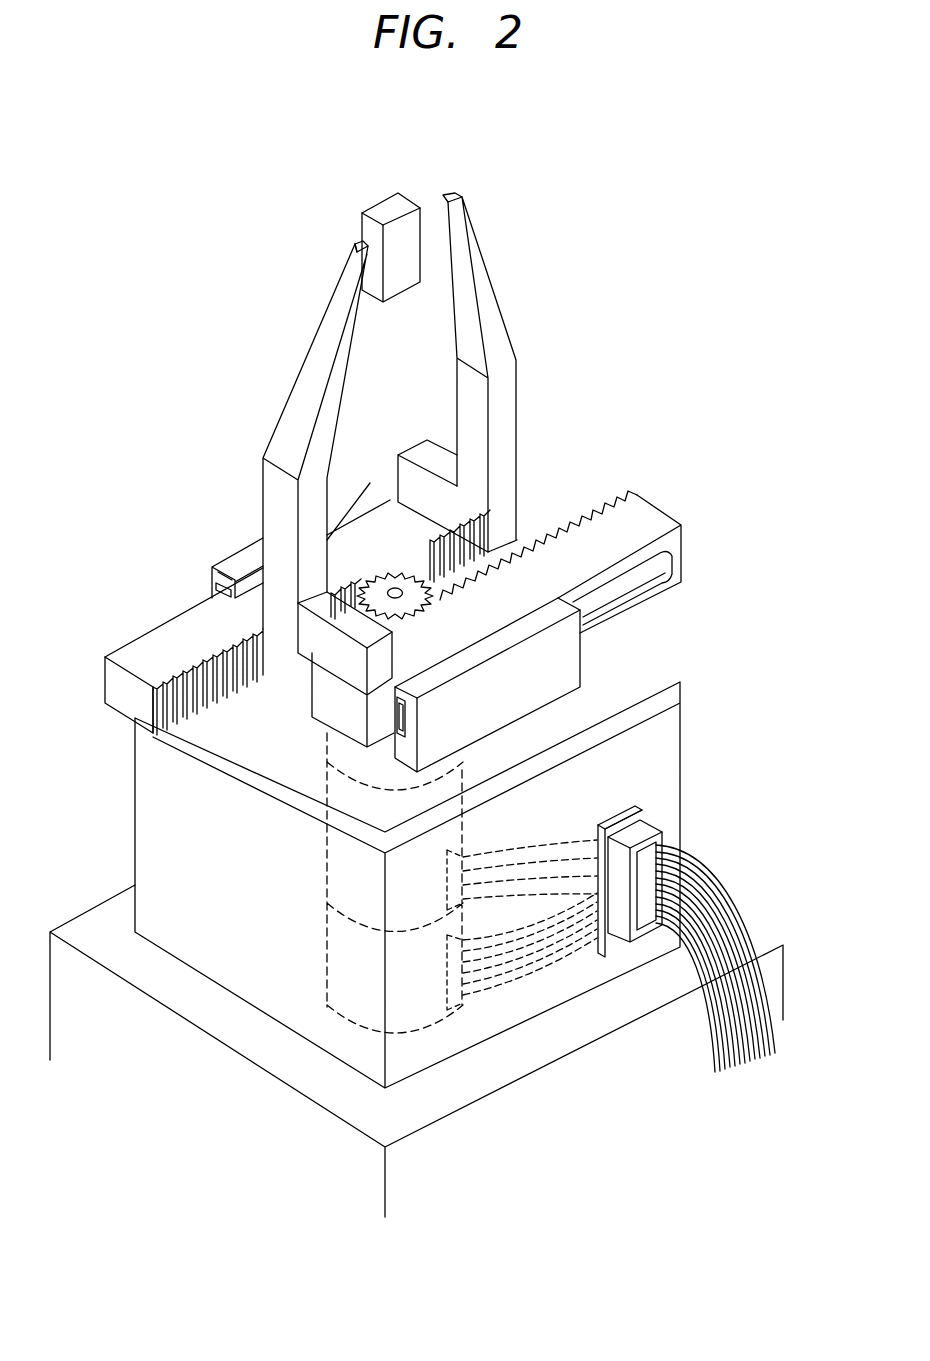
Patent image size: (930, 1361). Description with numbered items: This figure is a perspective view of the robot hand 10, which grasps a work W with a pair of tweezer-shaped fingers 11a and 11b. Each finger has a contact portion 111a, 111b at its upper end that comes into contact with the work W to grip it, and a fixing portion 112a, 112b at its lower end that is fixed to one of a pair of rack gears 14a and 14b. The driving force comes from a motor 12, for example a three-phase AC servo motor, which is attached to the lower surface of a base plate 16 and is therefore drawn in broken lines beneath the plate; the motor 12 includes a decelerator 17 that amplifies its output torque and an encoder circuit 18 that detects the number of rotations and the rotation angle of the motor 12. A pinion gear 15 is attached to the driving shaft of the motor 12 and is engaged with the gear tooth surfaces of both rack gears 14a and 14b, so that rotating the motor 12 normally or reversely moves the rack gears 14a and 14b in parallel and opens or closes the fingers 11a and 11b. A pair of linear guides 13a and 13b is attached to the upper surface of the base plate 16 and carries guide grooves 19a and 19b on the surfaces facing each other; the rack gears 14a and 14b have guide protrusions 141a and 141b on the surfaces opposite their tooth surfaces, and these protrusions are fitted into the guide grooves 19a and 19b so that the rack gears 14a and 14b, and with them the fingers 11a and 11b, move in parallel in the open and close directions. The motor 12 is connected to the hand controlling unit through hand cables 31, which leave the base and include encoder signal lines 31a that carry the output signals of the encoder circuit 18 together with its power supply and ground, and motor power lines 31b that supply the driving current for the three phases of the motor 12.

The robot hand 10 is at (556, 140).
The work W is at (387, 210).
The finger 11a is at (373, 477).
The finger 11b is at (457, 342).
The contact portion 111a is at (345, 282).
The contact portion 111b is at (464, 207).
The fixing portion 112a is at (387, 663).
The fixing portion 112b is at (423, 447).
The pinion gear 15 is at (392, 575).
The rack gear 14a is at (602, 541).
The rack gear 14b is at (133, 653).
The guide protrusion 141a is at (662, 572).
The guide protrusion 141b is at (250, 553).
The linear guide 13a is at (477, 685).
The linear guide 13b is at (259, 535).
The guide groove 19a is at (395, 715).
The guide groove 19b is at (214, 588).
The base plate 16 is at (416, 949).
The motor 12 is at (342, 880).
The decelerator 17 is at (340, 757).
The encoder circuit 18 is at (342, 993).
The hand cables 31 is at (643, 936).
The encoder signal lines 31a is at (560, 960).
The motor power lines 31b is at (565, 838).